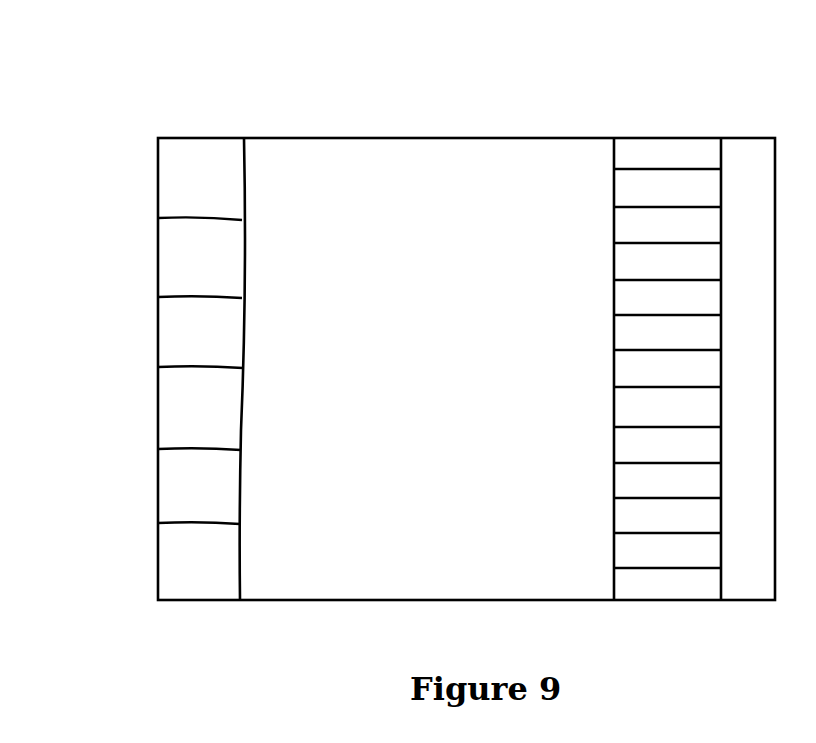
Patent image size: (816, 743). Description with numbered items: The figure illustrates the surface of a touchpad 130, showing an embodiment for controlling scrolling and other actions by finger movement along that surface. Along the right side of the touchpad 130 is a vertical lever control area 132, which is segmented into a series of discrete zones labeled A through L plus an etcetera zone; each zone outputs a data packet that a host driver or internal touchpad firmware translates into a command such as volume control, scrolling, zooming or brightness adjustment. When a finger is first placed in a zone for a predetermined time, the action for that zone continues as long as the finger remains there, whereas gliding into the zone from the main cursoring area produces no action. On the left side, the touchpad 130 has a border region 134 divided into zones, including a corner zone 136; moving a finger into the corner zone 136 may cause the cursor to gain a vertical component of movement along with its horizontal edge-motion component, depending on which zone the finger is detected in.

The touchpad 130 is at (335, 378).
The alphabetical index column 132 is at (712, 118).
The border region 134 is at (245, 97).
The corner zone 136 is at (171, 181).